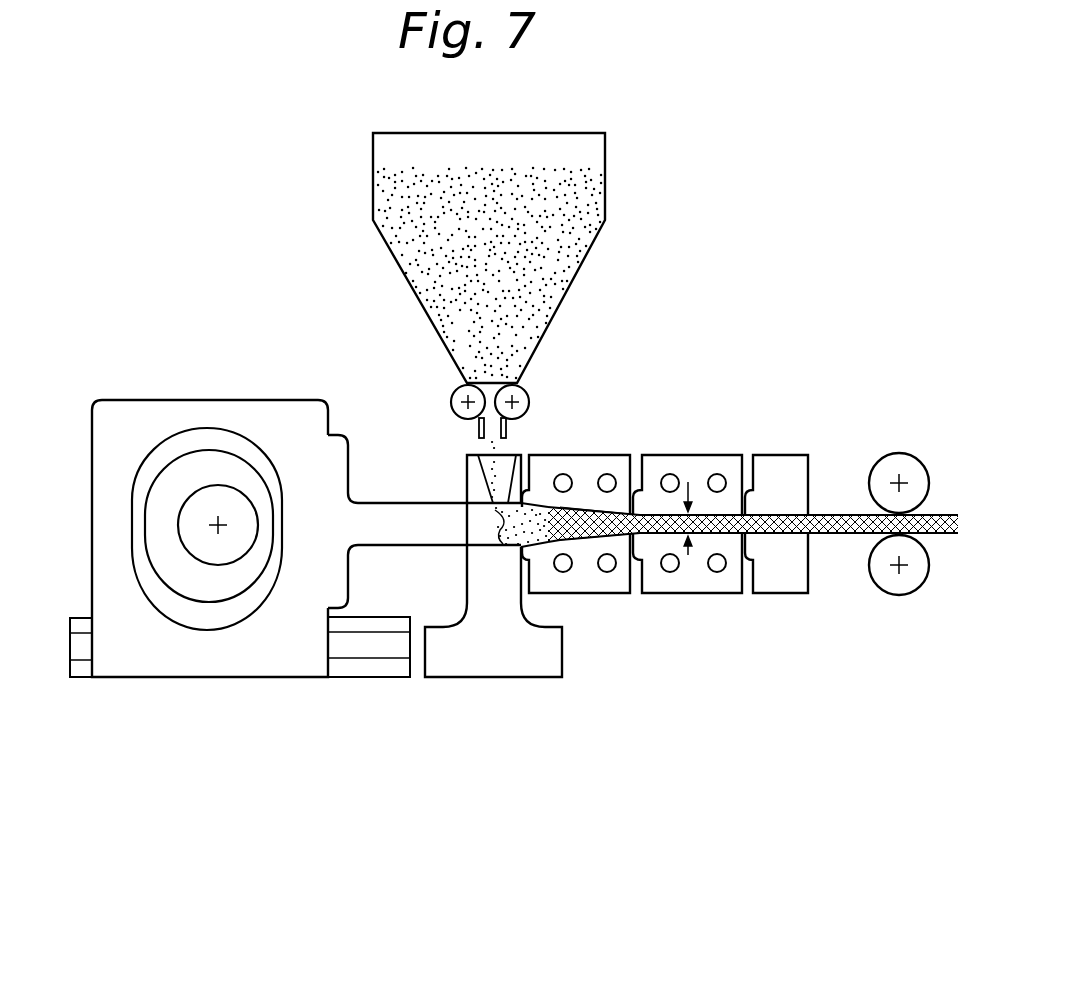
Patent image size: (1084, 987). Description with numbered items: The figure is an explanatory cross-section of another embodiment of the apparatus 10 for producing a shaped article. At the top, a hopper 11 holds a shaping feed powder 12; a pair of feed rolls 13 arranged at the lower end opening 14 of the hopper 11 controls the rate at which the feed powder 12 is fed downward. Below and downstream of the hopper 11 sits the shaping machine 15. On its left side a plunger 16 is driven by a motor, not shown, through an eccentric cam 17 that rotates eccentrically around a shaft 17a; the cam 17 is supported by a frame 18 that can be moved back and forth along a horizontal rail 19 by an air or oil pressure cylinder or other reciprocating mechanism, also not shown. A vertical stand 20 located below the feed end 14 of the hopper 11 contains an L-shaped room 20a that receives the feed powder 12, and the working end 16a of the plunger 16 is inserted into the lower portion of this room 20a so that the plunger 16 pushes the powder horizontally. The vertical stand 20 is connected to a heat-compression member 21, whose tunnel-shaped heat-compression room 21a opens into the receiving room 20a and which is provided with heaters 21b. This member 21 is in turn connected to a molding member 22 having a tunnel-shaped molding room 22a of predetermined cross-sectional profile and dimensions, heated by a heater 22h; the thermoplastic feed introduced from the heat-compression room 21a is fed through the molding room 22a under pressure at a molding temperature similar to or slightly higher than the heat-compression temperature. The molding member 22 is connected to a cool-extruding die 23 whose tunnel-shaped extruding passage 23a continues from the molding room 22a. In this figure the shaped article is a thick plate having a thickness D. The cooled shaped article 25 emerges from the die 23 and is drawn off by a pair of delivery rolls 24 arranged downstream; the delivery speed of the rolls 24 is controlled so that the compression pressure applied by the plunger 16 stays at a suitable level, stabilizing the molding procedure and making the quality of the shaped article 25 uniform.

The apparatus 10 is at (350, 134).
The hopper 11 is at (606, 141).
The shaping feed powder 12 is at (533, 296).
The feed rolls 13 is at (517, 383).
The lower end opening 14 is at (507, 428).
The shaping machine 15 is at (465, 737).
The plunger 16 is at (385, 520).
The working end 16a is at (497, 547).
The eccentric cam 17 is at (172, 472).
The shaft 17a is at (215, 495).
The frame 18 is at (285, 432).
The horizontal rail 19 is at (357, 666).
The vertical stand 20 is at (532, 665).
The L-shaped room 20a is at (517, 523).
The heat-compression member 21 is at (585, 578).
The heat-compression room 21a is at (585, 537).
The heaters 21b is at (606, 476).
The molding member 22 is at (692, 575).
The molding room 22a is at (710, 532).
The heater 22h is at (721, 475).
The cool-extruding die 23 is at (782, 575).
The extruding passage 23a is at (795, 540).
The delivery rolls 24 is at (893, 455).
The shaped article 25 is at (830, 535).
The thickness D is at (700, 516).